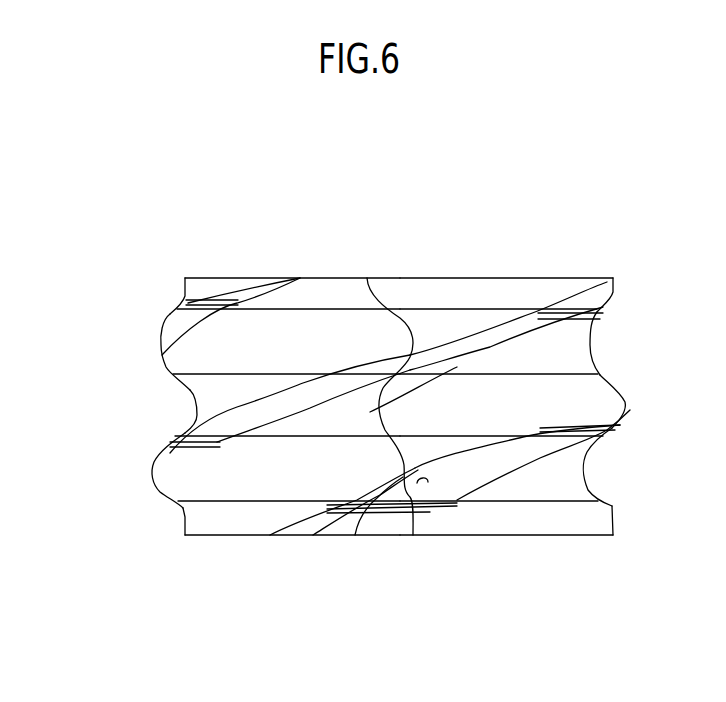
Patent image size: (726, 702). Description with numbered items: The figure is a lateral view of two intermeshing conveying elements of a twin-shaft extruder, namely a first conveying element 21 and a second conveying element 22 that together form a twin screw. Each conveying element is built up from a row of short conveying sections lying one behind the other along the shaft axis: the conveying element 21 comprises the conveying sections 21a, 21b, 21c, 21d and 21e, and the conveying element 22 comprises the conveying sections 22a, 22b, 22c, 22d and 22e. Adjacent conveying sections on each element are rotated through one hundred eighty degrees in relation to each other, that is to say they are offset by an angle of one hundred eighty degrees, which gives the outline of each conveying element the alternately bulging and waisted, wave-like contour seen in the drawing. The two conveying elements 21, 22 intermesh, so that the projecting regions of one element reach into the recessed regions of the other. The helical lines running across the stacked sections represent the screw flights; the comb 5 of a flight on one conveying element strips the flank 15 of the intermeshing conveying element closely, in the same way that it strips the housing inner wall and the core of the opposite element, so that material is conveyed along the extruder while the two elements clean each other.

The conveying element 21 is at (252, 258).
The conveying element 22 is at (592, 248).
The conveying section 21a is at (183, 293).
The conveying section 21b is at (162, 355).
The conveying section 21c is at (197, 408).
The conveying section 21d is at (152, 488).
The conveying section 21e is at (183, 518).
The conveying section 22a is at (613, 293).
The conveying section 22b is at (590, 345).
The conveying section 22c is at (626, 405).
The conveying section 22d is at (585, 463).
The conveying section 22e is at (615, 518).
The comb 5 is at (355, 535).
The flank 15 is at (413, 535).